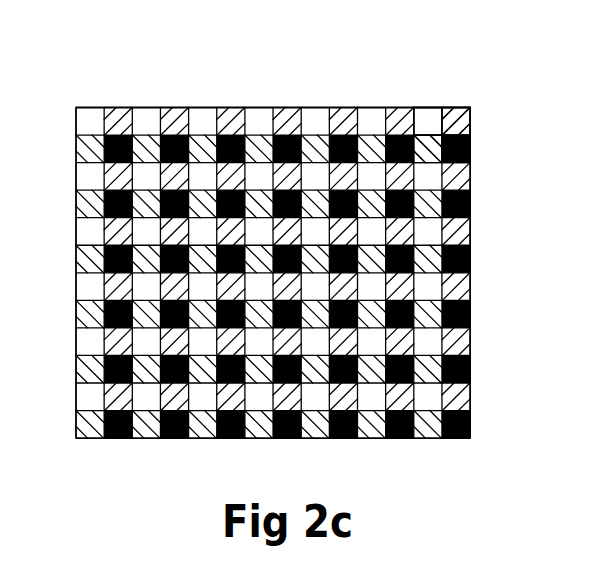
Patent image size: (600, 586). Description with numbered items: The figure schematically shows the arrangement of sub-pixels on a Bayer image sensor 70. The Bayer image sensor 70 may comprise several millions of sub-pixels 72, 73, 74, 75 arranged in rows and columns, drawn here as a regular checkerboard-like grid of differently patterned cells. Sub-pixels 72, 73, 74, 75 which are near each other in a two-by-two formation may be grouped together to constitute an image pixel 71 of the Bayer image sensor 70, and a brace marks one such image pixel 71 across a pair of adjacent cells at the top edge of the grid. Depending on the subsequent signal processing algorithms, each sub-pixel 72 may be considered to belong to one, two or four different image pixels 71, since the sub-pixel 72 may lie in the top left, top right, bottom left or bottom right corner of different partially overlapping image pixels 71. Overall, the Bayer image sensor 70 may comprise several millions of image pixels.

The Bayer image sensor 70 is at (153, 85).
The image pixel 71 is at (415, 77).
The sub-pixel 72 is at (422, 108).
The sub-pixel 73 is at (465, 108).
The sub-pixel 74 is at (470, 153).
The sub-pixel 75 is at (431, 155).